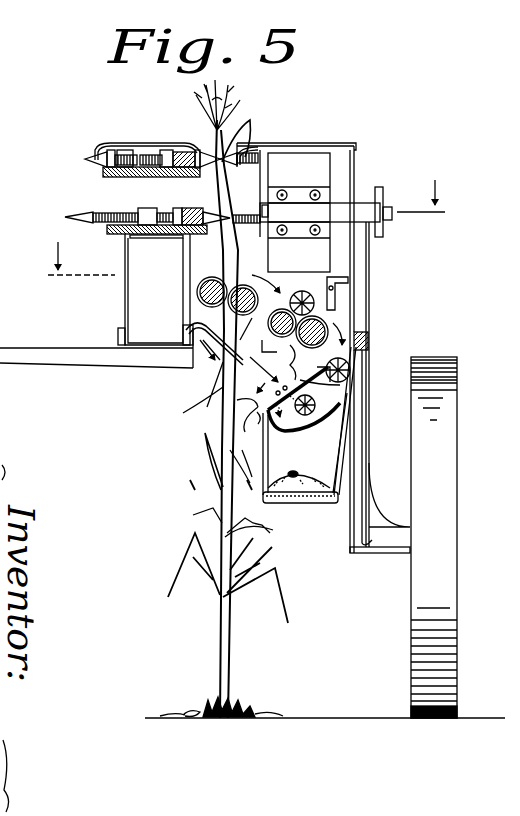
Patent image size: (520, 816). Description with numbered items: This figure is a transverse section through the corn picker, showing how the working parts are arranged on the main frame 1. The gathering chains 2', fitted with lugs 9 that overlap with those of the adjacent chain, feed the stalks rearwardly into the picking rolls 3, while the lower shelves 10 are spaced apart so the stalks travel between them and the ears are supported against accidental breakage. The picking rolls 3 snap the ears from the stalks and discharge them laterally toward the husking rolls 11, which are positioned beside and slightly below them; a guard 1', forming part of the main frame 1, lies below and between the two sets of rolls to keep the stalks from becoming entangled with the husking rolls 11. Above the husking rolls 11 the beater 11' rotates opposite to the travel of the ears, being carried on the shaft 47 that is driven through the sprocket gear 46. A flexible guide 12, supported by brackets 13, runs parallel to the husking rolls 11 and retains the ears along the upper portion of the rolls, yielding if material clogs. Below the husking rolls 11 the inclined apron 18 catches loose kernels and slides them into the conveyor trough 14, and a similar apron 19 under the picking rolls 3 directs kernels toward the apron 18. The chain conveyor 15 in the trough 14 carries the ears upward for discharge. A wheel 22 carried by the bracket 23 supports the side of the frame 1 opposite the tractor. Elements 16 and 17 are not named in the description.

The main frame 1 is at (374, 387).
The guard 1' is at (199, 384).
The gathering chains 2' is at (195, 157).
The picking rolls 3 is at (172, 292).
The lugs 9 is at (85, 160).
The lower shelves 10 is at (107, 228).
The husking rolls 11 is at (338, 327).
The beater 11' is at (308, 220).
The guide 12 is at (48, 368).
The brackets 13 is at (340, 277).
The conveyor trough 14 is at (297, 436).
The chain conveyor 15 is at (320, 432).
The inclined chute 16 is at (330, 416).
The guide arm 17 is at (333, 300).
The inclined apron 18 is at (348, 375).
The apron 19 is at (193, 373).
The wheel 22 is at (457, 361).
The bracket 23 is at (348, 505).
The sprocket gear 46 is at (380, 186).
The shaft 47 is at (393, 210).